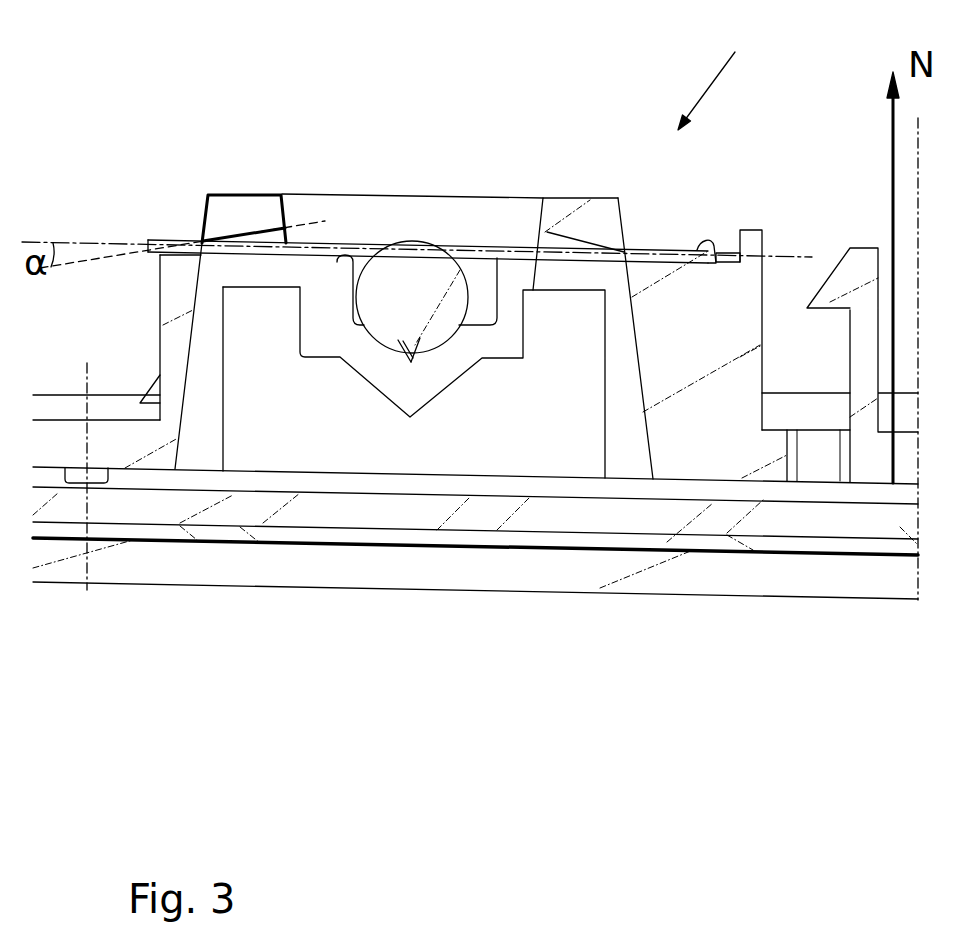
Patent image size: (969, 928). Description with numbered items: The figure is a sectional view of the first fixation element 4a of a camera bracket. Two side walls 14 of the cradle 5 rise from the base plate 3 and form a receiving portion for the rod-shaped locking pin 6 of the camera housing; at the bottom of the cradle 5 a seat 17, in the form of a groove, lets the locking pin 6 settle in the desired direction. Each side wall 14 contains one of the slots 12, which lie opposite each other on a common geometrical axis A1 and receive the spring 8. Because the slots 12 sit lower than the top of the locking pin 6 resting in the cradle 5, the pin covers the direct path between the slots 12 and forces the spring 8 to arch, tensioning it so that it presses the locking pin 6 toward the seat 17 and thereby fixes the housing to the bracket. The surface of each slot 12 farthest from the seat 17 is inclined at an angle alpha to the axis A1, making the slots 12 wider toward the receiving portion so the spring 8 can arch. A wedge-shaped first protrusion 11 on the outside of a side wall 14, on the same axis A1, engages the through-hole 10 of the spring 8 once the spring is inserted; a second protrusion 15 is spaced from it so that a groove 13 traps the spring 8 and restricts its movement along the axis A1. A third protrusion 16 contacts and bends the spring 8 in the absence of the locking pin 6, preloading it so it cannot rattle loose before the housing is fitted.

The base plate 3 is at (678, 492).
The first fixation element 4a is at (731, 77).
The cradle 5 is at (622, 335).
The locking pin 6 is at (421, 311).
The spring 8 is at (184, 248).
The through-hole 10 is at (712, 257).
The first protrusion 11 is at (702, 246).
The slots 12 is at (555, 245).
The groove 13 is at (748, 234).
The side walls 14 is at (232, 208).
The second protrusion 15 is at (755, 246).
The third protrusion 16 is at (338, 257).
The seat 17 is at (410, 350).
The common geometrical axis A1 is at (106, 243).